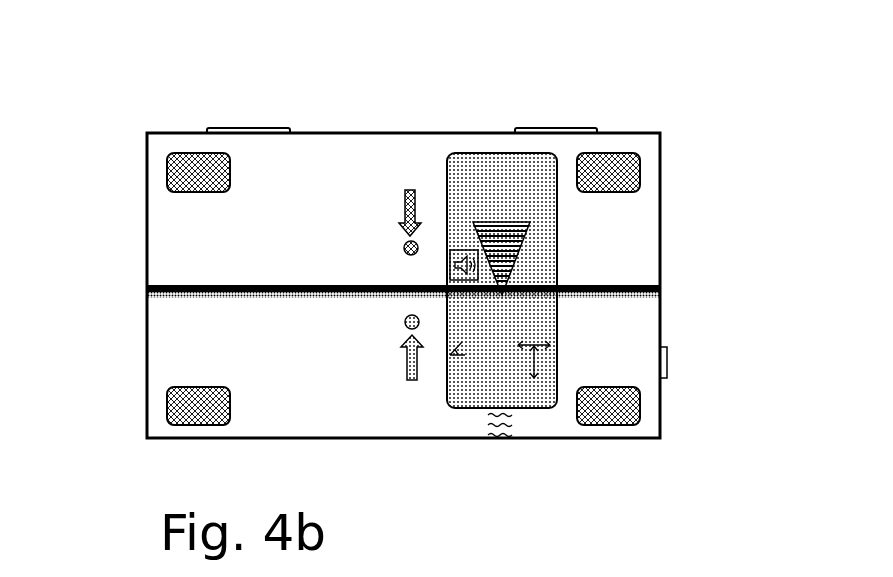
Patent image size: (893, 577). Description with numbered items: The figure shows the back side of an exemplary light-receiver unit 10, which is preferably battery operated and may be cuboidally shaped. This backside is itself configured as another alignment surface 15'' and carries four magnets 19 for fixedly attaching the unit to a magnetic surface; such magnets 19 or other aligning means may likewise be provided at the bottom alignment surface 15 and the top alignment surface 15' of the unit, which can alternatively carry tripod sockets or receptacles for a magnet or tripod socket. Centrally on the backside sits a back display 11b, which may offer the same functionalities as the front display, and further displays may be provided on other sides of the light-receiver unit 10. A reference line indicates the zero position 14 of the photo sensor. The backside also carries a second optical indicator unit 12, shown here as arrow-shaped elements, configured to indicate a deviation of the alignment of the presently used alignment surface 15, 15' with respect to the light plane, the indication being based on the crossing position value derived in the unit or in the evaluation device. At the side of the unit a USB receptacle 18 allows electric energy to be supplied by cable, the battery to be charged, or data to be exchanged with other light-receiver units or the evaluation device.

The light-receiver unit 10 is at (526, 73).
The back display 11b is at (538, 163).
The optical indicator unit 12 is at (408, 190).
The zero position 14 is at (613, 285).
The bottom alignment surface 15 is at (297, 397).
The top alignment surface 15' is at (456, 238).
The alignment surface 15'' is at (251, 209).
The USB receptacle 18 is at (667, 360).
The magnets 19 is at (231, 130).